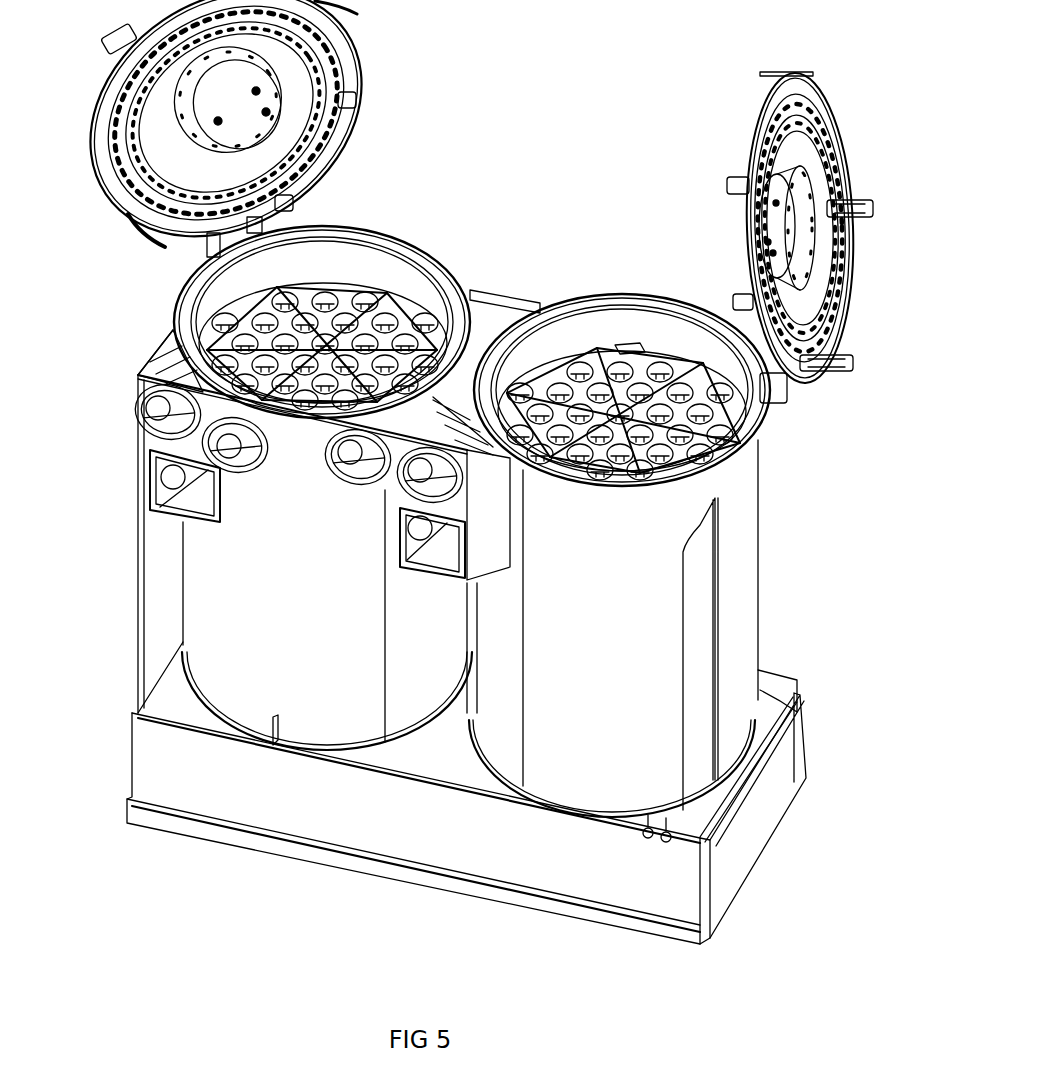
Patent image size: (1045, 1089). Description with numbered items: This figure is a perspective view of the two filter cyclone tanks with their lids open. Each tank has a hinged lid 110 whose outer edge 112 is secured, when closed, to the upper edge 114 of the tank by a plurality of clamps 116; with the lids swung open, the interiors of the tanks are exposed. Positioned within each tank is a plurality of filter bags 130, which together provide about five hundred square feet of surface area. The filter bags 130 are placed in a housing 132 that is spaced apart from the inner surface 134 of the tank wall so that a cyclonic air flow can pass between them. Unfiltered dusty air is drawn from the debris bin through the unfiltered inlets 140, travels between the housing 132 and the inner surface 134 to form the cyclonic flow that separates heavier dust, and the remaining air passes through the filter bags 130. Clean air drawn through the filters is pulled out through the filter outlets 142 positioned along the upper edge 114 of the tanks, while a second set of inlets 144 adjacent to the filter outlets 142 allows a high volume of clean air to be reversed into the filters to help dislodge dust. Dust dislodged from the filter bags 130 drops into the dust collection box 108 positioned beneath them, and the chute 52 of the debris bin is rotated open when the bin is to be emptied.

The chute 52 is at (670, 893).
The dust collection box 108 is at (740, 837).
The hinged lid 110 is at (852, 180).
The outer edge 112 is at (833, 110).
The upper edge 114 is at (750, 438).
The clamps 116 is at (853, 353).
The filter bags 130 is at (547, 370).
The housing 132 is at (625, 347).
The inner surface 134 is at (665, 318).
The unfiltered inlets 140 is at (440, 553).
The filter outlets 142 is at (432, 487).
The second set of inlets 144 is at (365, 475).